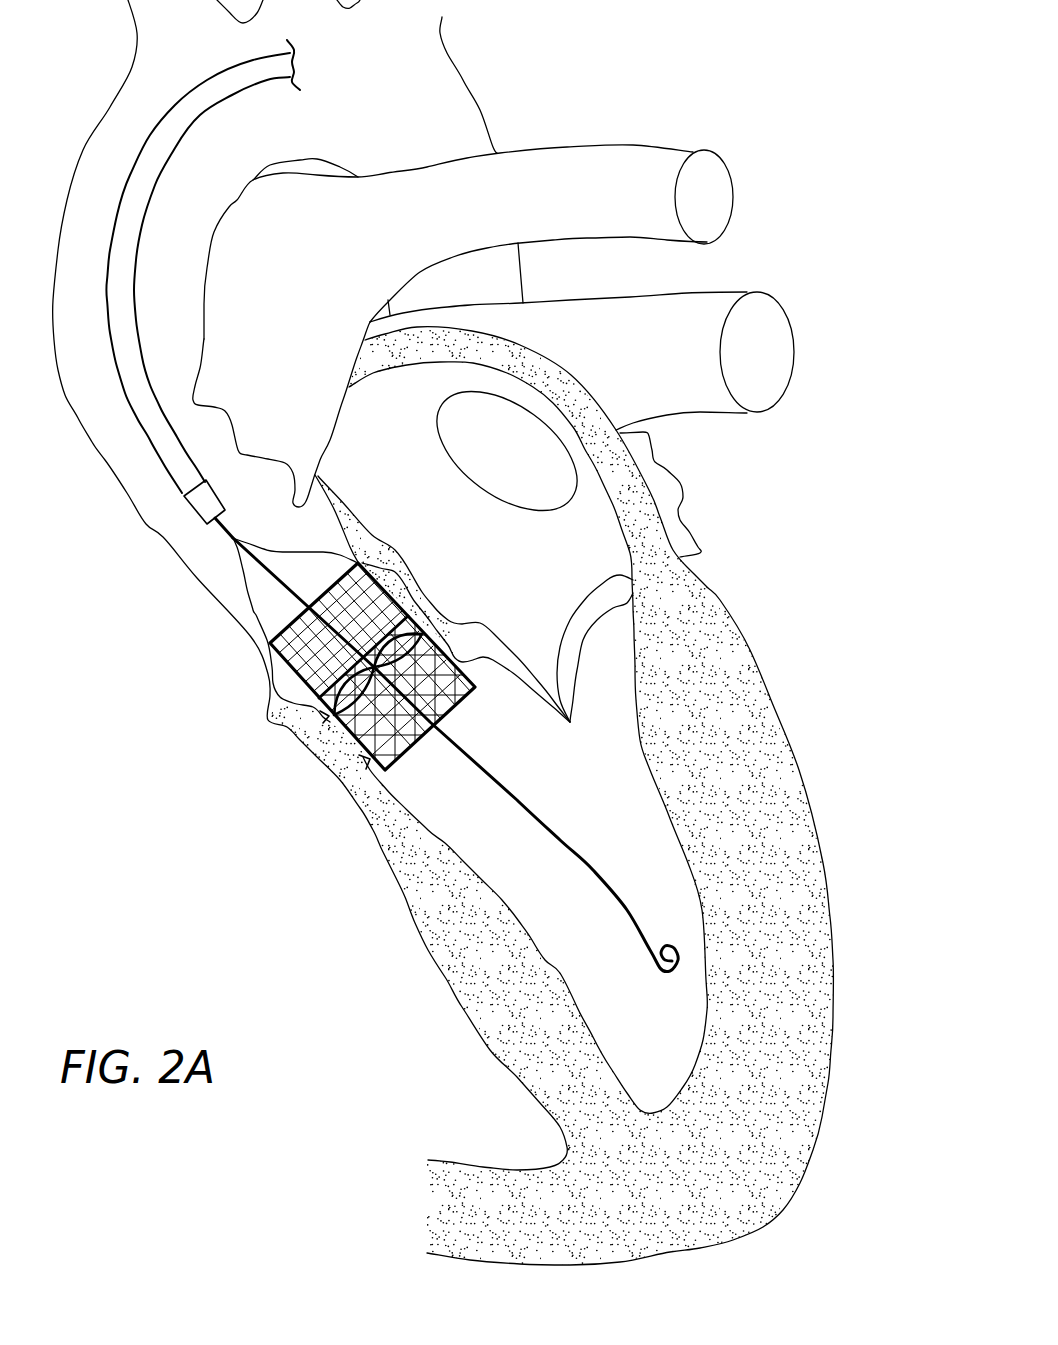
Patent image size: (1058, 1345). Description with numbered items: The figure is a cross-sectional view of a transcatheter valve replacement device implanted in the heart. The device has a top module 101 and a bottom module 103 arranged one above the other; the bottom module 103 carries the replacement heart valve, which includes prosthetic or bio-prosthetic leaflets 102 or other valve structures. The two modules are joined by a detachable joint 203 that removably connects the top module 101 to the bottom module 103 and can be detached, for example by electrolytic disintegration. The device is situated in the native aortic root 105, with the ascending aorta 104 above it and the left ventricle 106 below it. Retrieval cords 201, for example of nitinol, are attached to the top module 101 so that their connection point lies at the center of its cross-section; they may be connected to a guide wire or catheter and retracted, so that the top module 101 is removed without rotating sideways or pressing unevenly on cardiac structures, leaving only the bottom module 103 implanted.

The top module 101 is at (293, 616).
The leaflets 102 is at (365, 742).
The bottom module 103 is at (385, 772).
The ascending aorta 104 is at (155, 492).
The native aortic root 105 is at (276, 691).
The left ventricle 106 is at (627, 855).
The retrieval cords 201 is at (241, 574).
The detachable joint 203 is at (290, 712).